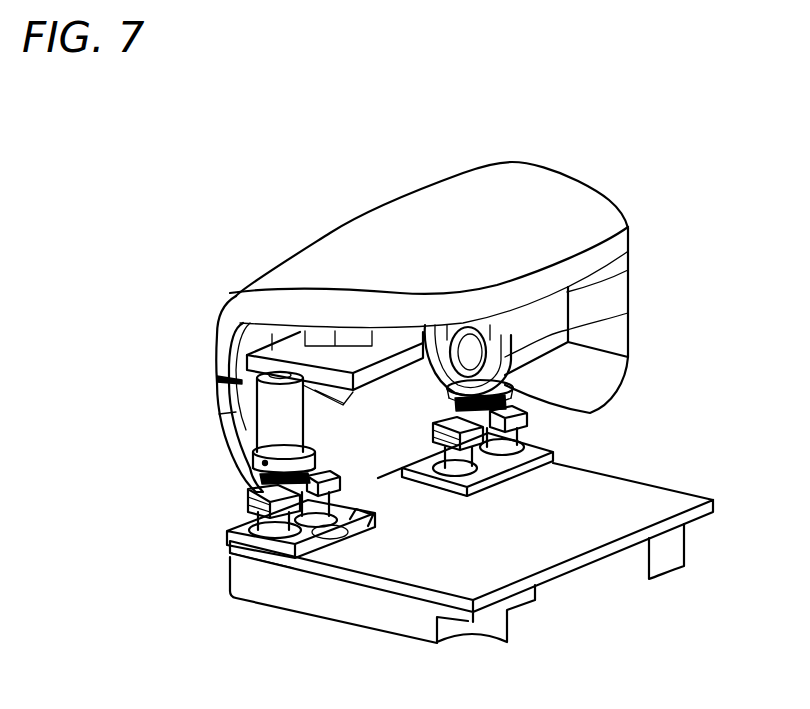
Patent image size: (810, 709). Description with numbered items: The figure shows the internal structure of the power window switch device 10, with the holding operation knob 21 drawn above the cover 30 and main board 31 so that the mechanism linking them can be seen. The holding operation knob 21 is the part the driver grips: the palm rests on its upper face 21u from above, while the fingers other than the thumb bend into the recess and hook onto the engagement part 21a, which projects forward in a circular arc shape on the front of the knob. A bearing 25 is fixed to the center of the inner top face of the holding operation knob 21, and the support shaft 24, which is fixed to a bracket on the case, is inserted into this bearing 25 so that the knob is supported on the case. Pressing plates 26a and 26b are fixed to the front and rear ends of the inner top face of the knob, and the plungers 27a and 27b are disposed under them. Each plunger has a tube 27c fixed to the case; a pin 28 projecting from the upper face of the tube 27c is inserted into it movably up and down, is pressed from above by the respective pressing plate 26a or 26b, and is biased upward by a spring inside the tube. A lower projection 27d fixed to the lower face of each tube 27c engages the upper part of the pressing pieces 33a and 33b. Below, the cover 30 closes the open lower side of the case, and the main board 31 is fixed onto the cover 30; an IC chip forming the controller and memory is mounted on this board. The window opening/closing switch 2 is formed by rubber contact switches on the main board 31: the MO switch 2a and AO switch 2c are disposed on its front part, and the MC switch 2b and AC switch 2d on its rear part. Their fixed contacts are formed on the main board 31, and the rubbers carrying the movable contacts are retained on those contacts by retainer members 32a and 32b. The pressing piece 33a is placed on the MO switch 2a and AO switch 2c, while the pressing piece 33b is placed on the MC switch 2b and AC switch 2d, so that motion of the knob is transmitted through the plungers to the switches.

The power window switch device 10 is at (223, 155).
The holding operation knob 21 is at (385, 205).
The upper face 21u is at (455, 200).
The engagement part 21a is at (573, 175).
The support shaft 24 is at (475, 325).
The bearing 25 is at (485, 322).
The pressing plate 26a is at (628, 272).
The pressing plate 26b is at (218, 353).
The plunger 27a is at (628, 318).
The plunger 27b is at (227, 427).
The tube 27c is at (360, 369).
The lower projection 27d is at (517, 405).
The pin 28 is at (222, 387).
The pressing piece 33a is at (432, 430).
The pressing piece 33b is at (247, 498).
The window opening/closing switch 2 is at (590, 447).
The manual open (MO) switch 2a is at (517, 458).
The manual close (MC) switch 2b is at (325, 540).
The automatic open (AO) switch 2c is at (470, 470).
The automatic close (AC) switch 2d is at (362, 526).
The cover 30 is at (405, 640).
The main board 31 is at (572, 572).
The retainer member 32a is at (440, 492).
The retainer member 32b is at (252, 560).